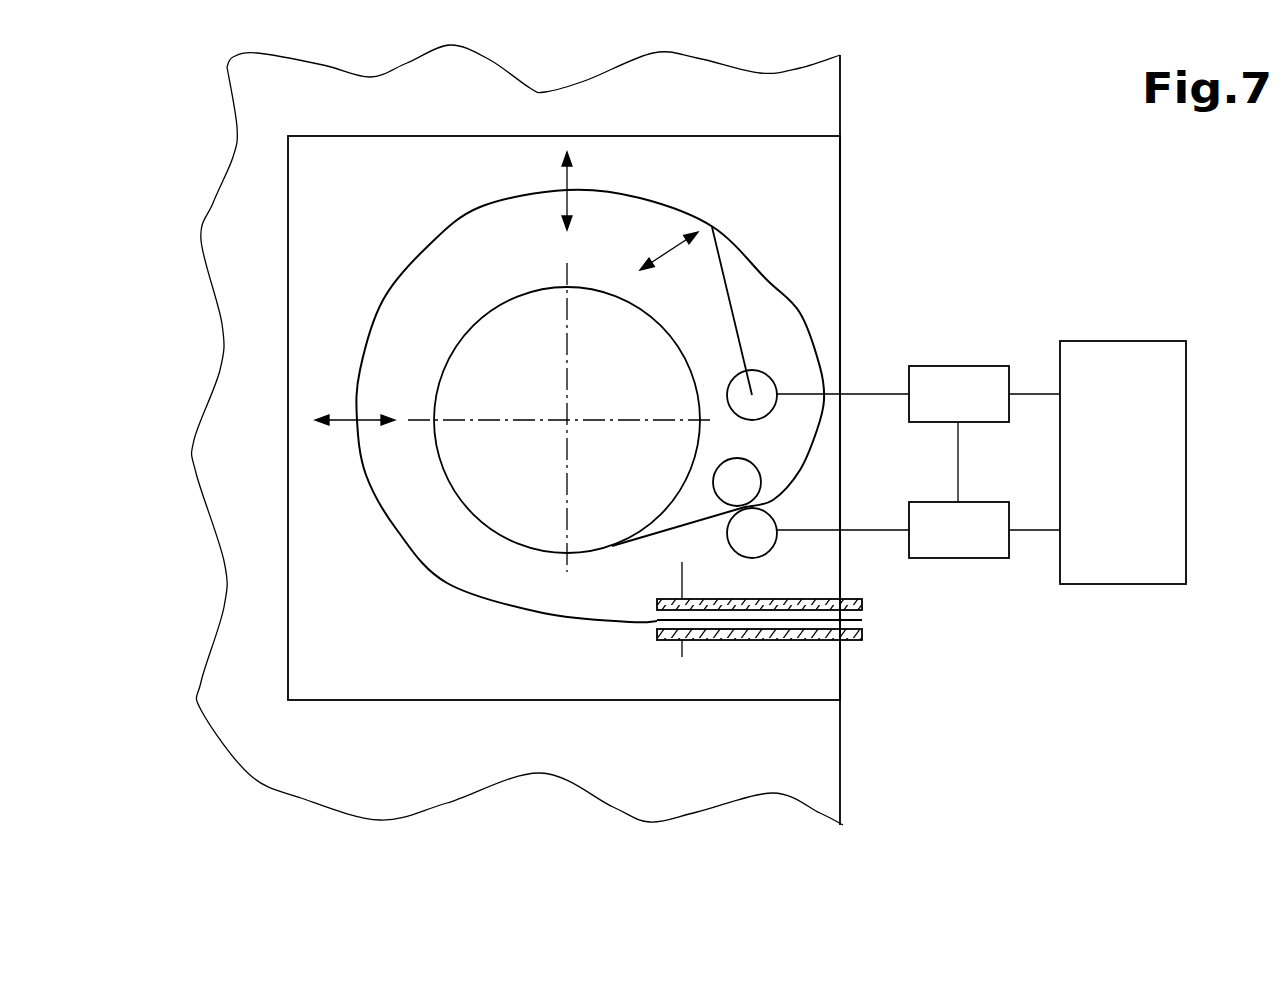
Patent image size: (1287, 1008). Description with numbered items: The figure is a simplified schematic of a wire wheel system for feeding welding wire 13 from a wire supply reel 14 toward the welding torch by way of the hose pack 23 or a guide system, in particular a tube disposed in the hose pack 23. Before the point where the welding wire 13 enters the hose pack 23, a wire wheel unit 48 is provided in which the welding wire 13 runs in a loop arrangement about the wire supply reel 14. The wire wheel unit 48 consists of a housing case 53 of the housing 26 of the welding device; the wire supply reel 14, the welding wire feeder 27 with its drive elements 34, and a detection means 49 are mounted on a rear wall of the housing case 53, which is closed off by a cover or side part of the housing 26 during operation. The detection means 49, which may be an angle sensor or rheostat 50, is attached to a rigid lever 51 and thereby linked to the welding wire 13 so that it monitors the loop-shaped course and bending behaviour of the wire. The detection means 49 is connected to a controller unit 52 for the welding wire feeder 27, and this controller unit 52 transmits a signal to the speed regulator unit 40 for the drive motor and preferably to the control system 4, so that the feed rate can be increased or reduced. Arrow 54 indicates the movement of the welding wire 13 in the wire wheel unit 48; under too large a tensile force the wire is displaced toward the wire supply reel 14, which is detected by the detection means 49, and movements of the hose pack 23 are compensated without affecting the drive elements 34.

The control system 4 is at (1141, 458).
The welding wire 13 is at (540, 618).
The wire supply reel 14 is at (487, 503).
The hose pack 23 is at (731, 664).
The housing 26 is at (240, 237).
The welding wire feeder 27 is at (801, 495).
The drive elements 34 is at (735, 482).
The speed regulator unit 40 is at (958, 542).
The wire wheel unit 48 is at (872, 191).
The detection means 49 is at (778, 338).
The angle sensor or rheostat 50 is at (752, 395).
The rigid lever 51 is at (732, 307).
The controller unit 52 is at (951, 388).
The housing case 53 is at (373, 185).
The arrow 54 is at (657, 250).